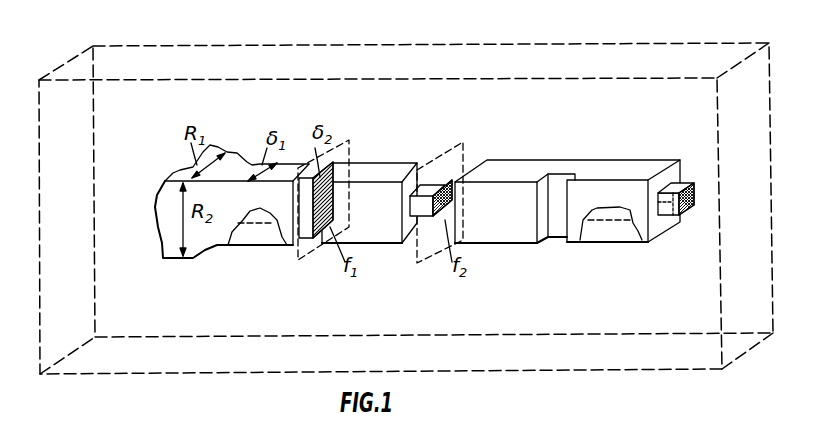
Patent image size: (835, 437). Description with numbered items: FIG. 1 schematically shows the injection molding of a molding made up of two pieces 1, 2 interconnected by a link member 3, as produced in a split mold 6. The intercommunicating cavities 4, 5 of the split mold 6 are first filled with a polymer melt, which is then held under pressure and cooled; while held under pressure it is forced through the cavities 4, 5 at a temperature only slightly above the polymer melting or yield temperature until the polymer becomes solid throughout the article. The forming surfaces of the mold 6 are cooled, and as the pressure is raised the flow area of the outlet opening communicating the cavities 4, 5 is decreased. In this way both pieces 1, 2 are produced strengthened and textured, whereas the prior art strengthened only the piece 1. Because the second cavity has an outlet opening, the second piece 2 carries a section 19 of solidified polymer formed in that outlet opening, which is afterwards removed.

The piece 1 is at (378, 172).
The piece 2 is at (567, 203).
The link member 3 is at (437, 188).
The cavity 4 is at (257, 237).
The cavity 5 is at (605, 231).
The split mold 6 is at (597, 88).
The section 19 is at (673, 213).